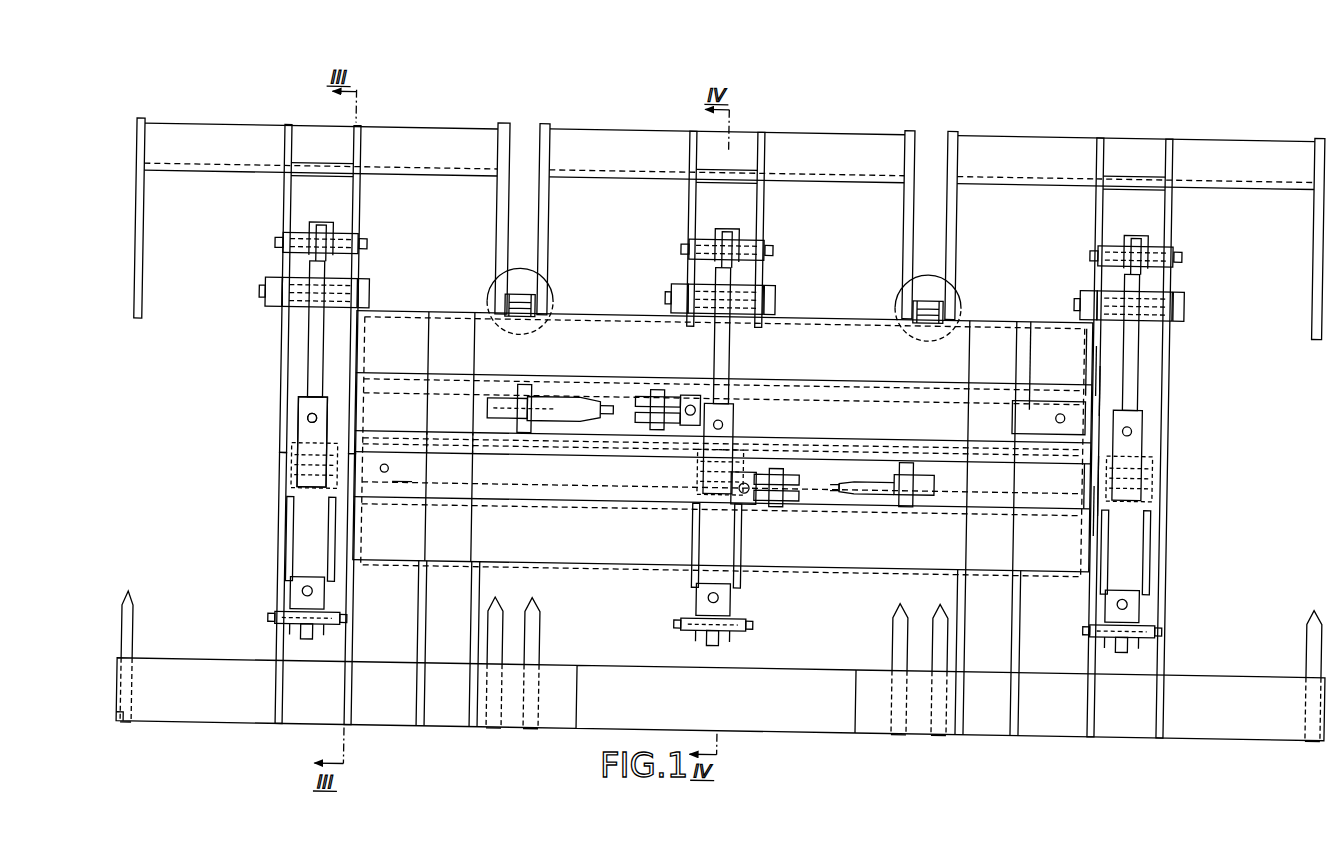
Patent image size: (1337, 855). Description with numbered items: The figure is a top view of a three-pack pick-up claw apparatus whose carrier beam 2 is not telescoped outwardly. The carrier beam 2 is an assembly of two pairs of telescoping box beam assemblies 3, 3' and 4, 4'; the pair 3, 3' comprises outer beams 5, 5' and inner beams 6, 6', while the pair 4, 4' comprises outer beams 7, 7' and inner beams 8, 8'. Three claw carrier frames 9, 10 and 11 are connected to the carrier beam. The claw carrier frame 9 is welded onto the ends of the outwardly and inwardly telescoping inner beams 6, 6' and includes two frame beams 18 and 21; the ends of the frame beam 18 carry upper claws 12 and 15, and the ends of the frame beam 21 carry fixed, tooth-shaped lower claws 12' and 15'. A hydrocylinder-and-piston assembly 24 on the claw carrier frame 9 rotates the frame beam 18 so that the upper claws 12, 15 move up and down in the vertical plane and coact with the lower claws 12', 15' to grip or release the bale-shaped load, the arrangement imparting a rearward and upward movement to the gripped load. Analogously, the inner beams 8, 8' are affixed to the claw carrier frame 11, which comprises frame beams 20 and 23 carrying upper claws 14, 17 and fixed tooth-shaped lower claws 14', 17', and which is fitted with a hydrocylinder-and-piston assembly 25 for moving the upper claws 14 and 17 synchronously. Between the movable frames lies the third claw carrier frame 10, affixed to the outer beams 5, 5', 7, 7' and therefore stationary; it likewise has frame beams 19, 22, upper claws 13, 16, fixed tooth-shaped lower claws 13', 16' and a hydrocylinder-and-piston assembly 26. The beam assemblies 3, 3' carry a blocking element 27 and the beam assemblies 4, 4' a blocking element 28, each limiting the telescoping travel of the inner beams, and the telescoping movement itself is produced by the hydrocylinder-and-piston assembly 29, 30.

The carrier beam 2 is at (810, 310).
The telescoping box beam assembly 3 is at (301, 517).
The telescoping box beam assembly 3' is at (296, 442).
The telescoping box beam assembly 4 is at (1150, 478).
The telescoping box beam assembly 4' is at (1156, 398).
The outer beam 5 is at (307, 587).
The outer beam 5' is at (308, 288).
The inner beam 6 is at (303, 589).
The inner beam 6' is at (304, 290).
The outer beam 7 is at (1134, 486).
The outer beam 7' is at (1145, 360).
The inner beam 8 is at (1146, 511).
The inner beam 8' is at (1152, 371).
The claw carrier frame 9 is at (252, 126).
The claw carrier frame 10 is at (606, 130).
The claw carrier frame 11 is at (1237, 140).
The upper claw 12 is at (128, 237).
The upper claw 13 is at (565, 219).
The upper claw 14 is at (971, 225).
The upper claw 15 is at (477, 218).
The upper claw 16 is at (887, 225).
The upper claw 17 is at (1294, 239).
The lower claw 12' is at (147, 651).
The lower claw 13' is at (554, 651).
The lower claw 14' is at (924, 656).
The lower claw 15' is at (510, 650).
The lower claw 16' is at (874, 661).
The lower claw 17' is at (1290, 671).
The frame beam 18 is at (208, 153).
The frame beam 19 is at (623, 158).
The frame beam 20 is at (1027, 165).
The frame beam 21 is at (207, 668).
The frame beam 22 is at (659, 712).
The frame beam 23 is at (1212, 719).
The hydrocylinder-and-piston assembly 24 is at (302, 343).
The hydrocylinder-and-piston assembly 25 is at (1149, 480).
The hydrocylinder-and-piston assembly 26 is at (714, 356).
The blocking element 27 is at (578, 395).
The blocking element 28 is at (849, 466).
The hydrocylinder-and-piston assembly 29 is at (398, 470).
The hydrocylinder-and-piston assembly 30 is at (1032, 347).